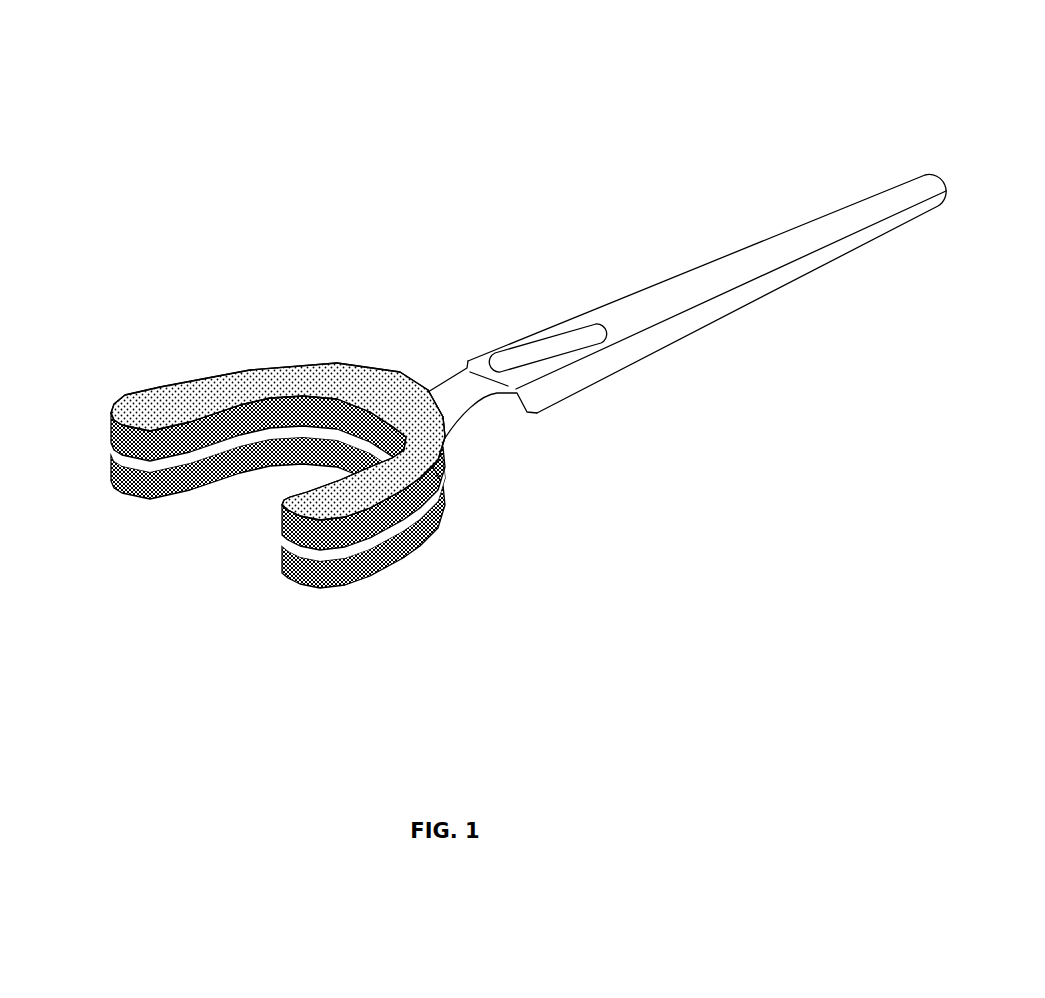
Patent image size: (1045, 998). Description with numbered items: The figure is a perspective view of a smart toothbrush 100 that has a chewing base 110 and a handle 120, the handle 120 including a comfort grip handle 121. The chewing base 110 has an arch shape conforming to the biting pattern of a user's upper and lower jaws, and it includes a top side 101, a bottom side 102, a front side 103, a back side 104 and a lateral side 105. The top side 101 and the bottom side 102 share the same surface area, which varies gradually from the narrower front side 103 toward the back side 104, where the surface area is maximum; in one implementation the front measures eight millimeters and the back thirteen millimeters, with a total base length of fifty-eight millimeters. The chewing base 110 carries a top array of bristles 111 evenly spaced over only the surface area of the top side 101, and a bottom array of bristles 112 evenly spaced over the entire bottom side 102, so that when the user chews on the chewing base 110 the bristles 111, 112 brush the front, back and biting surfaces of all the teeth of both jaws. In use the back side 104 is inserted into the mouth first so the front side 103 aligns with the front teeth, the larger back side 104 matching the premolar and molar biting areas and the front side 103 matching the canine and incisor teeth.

The smart toothbrush 100 is at (461, 106).
The top side 101 is at (236, 434).
The bottom side 102 is at (294, 533).
The front side 103 is at (448, 450).
The back side 104 is at (283, 538).
The lateral side 105 is at (305, 424).
The chewing base 110 is at (147, 381).
The top array of bristles 111 is at (228, 386).
The bottom array of bristles 112 is at (146, 494).
The handle 120 is at (707, 293).
The comfort grip handle 121 is at (508, 348).